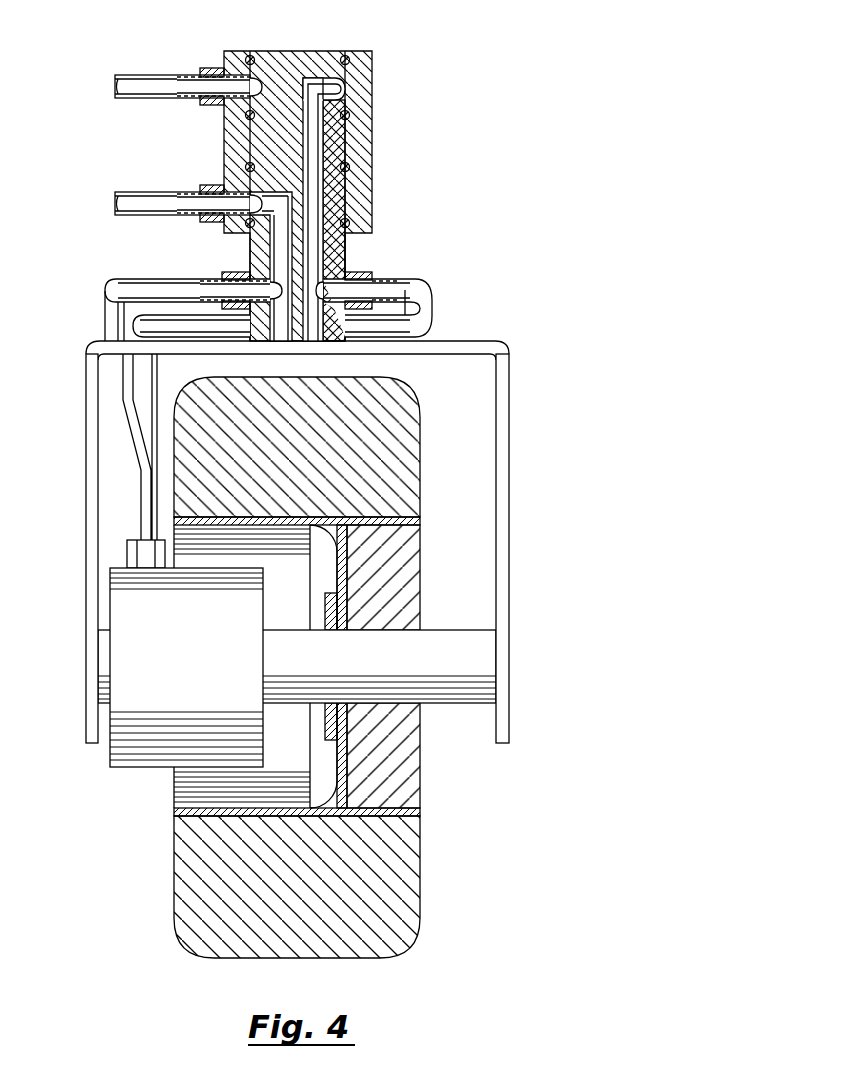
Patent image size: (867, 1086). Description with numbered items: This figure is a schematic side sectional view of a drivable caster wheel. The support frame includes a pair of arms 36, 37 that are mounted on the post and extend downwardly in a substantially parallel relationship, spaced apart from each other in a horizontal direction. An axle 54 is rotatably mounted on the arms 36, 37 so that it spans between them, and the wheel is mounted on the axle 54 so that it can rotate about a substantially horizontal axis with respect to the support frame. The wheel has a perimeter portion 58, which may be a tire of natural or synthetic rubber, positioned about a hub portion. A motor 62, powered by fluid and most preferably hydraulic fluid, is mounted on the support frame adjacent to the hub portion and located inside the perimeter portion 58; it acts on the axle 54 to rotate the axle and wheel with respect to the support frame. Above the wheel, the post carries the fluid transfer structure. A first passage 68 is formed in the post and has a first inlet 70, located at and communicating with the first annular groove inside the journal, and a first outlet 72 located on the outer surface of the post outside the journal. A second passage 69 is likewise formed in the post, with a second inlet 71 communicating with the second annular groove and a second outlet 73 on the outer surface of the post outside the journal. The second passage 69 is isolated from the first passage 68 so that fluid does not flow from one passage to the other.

The arm 36 is at (95, 487).
The arm 37 is at (498, 492).
The axle 54 is at (460, 647).
The perimeter portion 58 is at (398, 862).
The motor 62 is at (142, 613).
The first passage 68 is at (313, 152).
The second passage 69 is at (283, 260).
The first inlet 70 is at (335, 91).
The second inlet 71 is at (250, 193).
The first outlet 72 is at (323, 290).
The second outlet 73 is at (275, 290).